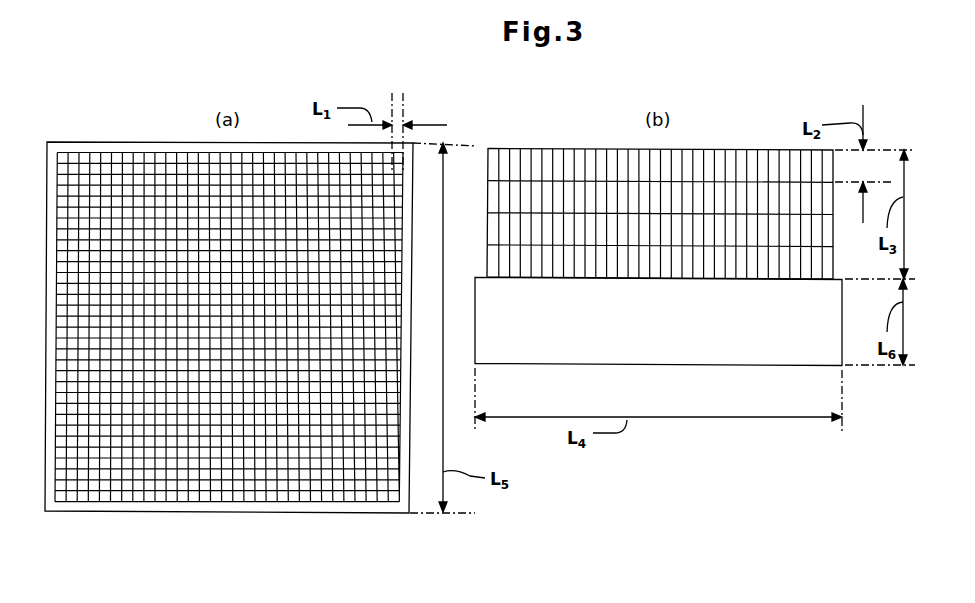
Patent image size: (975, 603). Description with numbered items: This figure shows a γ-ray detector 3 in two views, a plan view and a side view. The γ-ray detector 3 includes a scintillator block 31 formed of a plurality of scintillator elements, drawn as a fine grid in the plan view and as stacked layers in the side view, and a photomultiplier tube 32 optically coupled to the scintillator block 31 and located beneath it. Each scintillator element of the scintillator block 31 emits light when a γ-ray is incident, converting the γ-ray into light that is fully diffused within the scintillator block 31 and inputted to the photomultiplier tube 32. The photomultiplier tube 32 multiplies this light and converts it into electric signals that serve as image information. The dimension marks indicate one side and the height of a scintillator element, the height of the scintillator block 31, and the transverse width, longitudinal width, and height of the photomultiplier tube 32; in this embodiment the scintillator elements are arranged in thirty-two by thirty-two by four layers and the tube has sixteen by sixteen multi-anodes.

The γ-ray detector 3 is at (251, 519).
The scintillator block 31 is at (190, 495).
The photomultiplier tube 32 is at (125, 505).